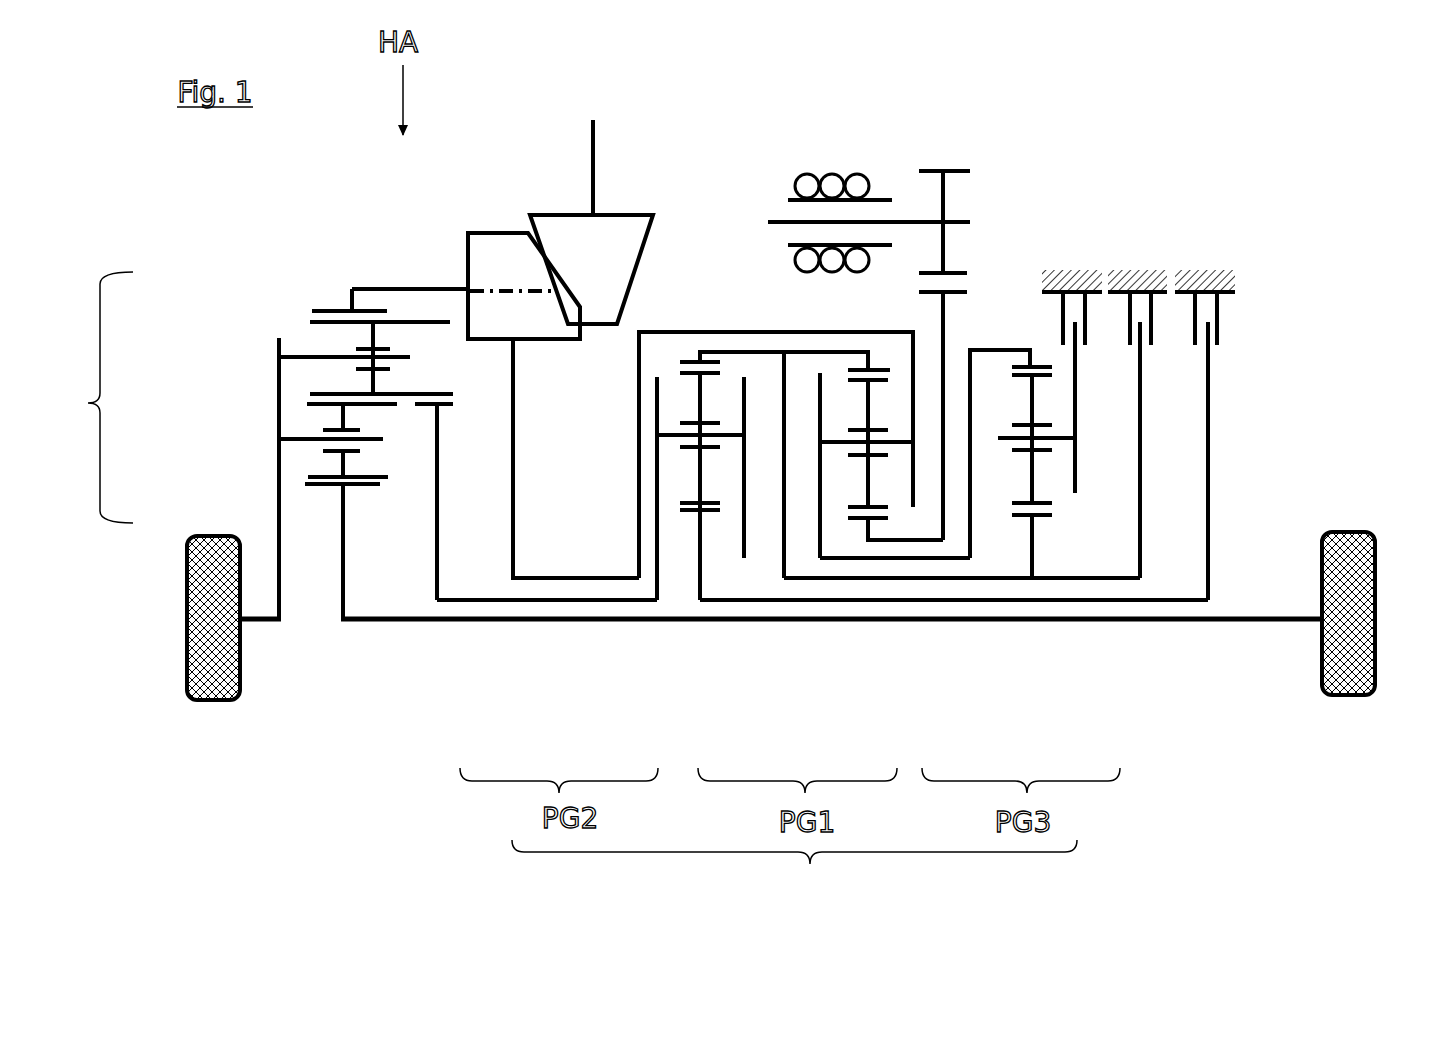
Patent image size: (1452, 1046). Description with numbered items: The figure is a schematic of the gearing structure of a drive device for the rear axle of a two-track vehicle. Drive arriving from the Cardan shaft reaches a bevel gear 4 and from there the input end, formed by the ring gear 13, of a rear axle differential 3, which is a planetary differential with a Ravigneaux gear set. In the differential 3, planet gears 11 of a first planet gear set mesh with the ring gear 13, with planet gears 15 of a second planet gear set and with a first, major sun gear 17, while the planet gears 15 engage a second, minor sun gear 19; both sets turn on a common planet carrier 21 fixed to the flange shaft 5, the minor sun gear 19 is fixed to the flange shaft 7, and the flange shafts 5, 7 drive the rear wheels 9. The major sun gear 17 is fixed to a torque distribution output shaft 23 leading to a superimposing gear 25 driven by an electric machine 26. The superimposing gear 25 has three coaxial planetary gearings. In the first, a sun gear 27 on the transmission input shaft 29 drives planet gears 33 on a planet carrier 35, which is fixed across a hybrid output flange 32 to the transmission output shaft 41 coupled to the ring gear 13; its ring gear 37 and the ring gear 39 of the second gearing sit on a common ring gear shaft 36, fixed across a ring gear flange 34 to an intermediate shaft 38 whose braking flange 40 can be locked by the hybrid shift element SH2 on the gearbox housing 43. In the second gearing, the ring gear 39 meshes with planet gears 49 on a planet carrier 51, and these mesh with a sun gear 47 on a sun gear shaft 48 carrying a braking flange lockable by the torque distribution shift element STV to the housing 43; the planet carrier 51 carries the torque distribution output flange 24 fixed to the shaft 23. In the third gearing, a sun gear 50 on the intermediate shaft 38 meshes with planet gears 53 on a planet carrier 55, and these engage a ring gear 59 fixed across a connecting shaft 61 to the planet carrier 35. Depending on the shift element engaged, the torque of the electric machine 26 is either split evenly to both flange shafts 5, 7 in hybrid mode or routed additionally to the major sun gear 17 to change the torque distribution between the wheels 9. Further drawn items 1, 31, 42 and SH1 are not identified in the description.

The drive train 1 is at (595, 135).
The rear axle differential 3 is at (266, 445).
The bevel gear 4 is at (630, 213).
The flange shaft 5 is at (267, 620).
The flange shaft 7 is at (1268, 620).
The rear wheels 9 is at (195, 635).
The planet gears of first planet gear set 11 is at (372, 380).
The ring gear 13 is at (312, 310).
The planet gears of second planet gear set 15 is at (343, 415).
The first, major sun gear 17 is at (435, 523).
The second, minor sun gear 19 is at (342, 543).
The common planet carrier 21 is at (277, 348).
The torque distribution output shaft 23 is at (497, 601).
The torque distribution output flange 24 is at (657, 399).
The superimposing gear 25 is at (794, 871).
The electric machine 26 is at (807, 172).
The sun gear 27 is at (847, 520).
The transmission input shaft 29 is at (917, 537).
The clutch 31 is at (948, 168).
The hybrid output flange 32 is at (910, 360).
The planet gears 33 is at (868, 545).
The ring gear flange 34 is at (783, 547).
The planet carrier 35 is at (818, 522).
The ring gear shaft 36 is at (738, 348).
The ring gear 37 is at (890, 372).
The intermediate shaft 38 is at (1117, 580).
The ring gear 39 is at (655, 425).
The braking flange 40 is at (1142, 443).
The transmission output shaft 41 is at (557, 575).
The shaft 42 is at (664, 328).
The gearbox housing 43 is at (1235, 278).
The sun gear 47 is at (700, 532).
The sun gear shaft 48 is at (1178, 598).
The planet gears 49 is at (680, 508).
The sun gear 50 is at (1053, 517).
The planet carrier 51 is at (745, 505).
The planet gears 53 is at (1030, 477).
The planet carrier 55 is at (1075, 493).
The ring gear 59 is at (970, 560).
The connecting shaft 61 is at (930, 558).
The first shifting element SH1 is at (1078, 286).
The hybrid shift element SH2 is at (1145, 286).
The torque distribution shift element STV is at (1212, 286).